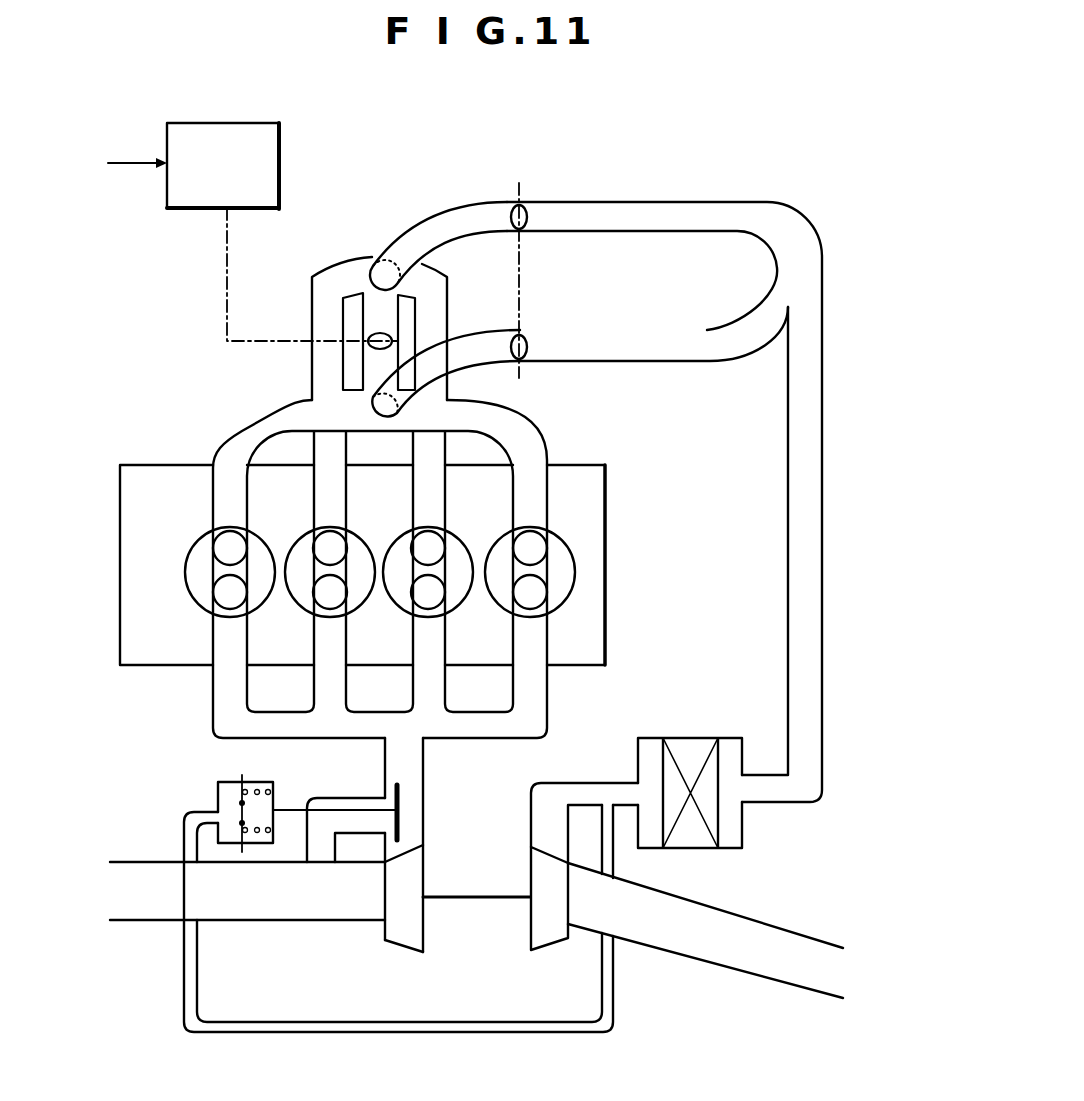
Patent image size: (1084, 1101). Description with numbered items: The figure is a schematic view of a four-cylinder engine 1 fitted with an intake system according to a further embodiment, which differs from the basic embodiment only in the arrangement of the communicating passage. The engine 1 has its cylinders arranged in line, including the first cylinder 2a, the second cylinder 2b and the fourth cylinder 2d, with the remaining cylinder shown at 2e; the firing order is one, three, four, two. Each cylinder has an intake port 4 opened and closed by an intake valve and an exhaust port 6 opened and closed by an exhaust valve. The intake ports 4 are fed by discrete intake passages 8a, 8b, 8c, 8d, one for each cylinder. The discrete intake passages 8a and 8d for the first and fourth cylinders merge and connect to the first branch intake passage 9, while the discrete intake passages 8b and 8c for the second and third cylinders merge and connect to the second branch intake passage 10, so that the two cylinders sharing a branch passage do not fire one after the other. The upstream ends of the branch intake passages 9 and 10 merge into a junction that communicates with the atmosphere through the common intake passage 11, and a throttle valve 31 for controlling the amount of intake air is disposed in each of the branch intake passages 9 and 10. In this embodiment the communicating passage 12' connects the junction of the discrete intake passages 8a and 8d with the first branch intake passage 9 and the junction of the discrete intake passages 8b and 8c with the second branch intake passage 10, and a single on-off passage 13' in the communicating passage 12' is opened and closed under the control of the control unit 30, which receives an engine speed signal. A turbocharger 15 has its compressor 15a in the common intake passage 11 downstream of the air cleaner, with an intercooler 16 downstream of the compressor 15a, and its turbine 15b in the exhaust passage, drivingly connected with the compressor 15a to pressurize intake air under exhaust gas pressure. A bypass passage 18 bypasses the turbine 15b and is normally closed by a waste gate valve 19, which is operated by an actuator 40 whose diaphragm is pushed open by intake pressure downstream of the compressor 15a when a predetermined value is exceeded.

The four-cylinder engine 1 is at (600, 547).
The first cylinder 2a is at (195, 584).
The second cylinder 2b is at (363, 590).
The fourth cylinder 2d is at (567, 580).
The third cylinder 2e is at (460, 548).
The intake port 4 is at (236, 547).
The exhaust port 6 is at (317, 593).
The discrete intake passage 8a is at (243, 447).
The discrete intake passage 8b is at (330, 282).
The discrete intake passage 8c is at (436, 278).
The discrete intake passage 8d is at (530, 443).
The first branch intake passage 9 is at (708, 350).
The second branch intake passage 10 is at (701, 212).
The common intake passage 11 is at (572, 784).
The communicating passage 12' is at (422, 337).
The on-off passage 13' is at (321, 354).
The turbocharger 15 is at (478, 898).
The compressor 15a is at (548, 942).
The turbine 15b is at (408, 930).
The intercooler 16 is at (688, 736).
The bypass passage 18 is at (336, 798).
The waste gate valve 19 is at (400, 790).
The control unit 30 is at (278, 126).
The throttle valve 31 is at (527, 215).
The actuator 40 is at (193, 777).